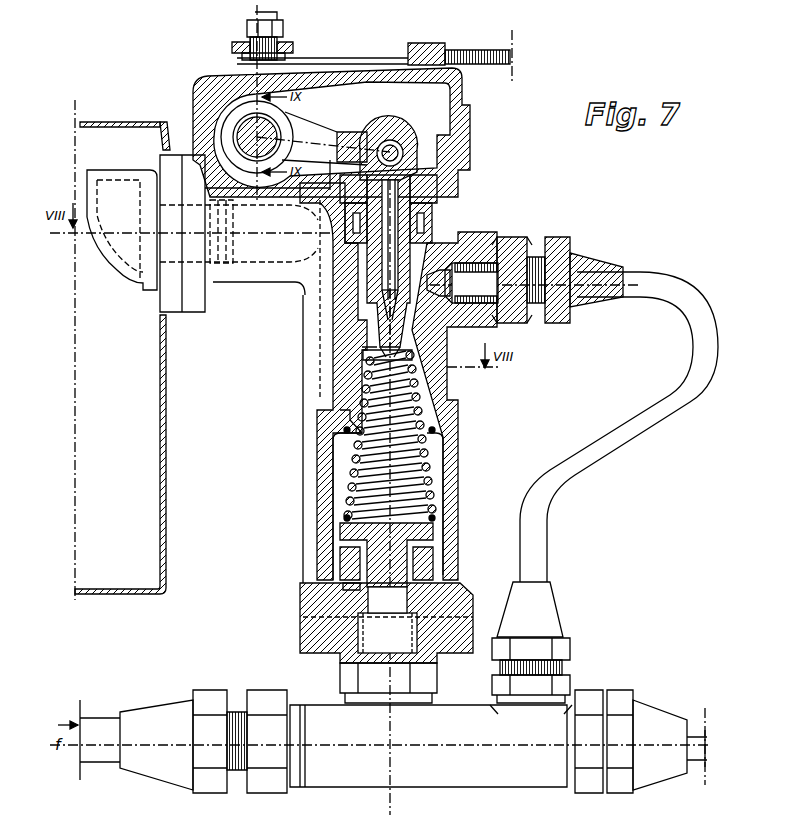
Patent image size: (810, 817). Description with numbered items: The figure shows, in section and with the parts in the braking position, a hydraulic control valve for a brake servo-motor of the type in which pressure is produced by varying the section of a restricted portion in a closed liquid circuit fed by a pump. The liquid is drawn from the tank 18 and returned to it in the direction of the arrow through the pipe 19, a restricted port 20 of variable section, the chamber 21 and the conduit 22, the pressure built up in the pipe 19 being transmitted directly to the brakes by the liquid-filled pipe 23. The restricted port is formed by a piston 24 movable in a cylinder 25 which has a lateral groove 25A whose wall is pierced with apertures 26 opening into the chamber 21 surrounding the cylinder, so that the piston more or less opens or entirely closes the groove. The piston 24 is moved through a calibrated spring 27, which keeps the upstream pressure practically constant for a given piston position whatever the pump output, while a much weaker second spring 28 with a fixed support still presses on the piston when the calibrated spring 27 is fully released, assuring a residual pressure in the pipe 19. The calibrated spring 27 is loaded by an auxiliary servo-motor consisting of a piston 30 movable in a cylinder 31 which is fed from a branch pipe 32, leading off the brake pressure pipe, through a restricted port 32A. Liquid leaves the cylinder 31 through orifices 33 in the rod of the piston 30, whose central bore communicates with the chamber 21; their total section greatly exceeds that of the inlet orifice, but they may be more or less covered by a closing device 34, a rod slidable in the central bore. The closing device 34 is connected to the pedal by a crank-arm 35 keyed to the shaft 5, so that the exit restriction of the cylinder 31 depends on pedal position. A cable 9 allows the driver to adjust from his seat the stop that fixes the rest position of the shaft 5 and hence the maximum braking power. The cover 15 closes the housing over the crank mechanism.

The shaft 5 is at (228, 128).
The cable 9 is at (368, 59).
The cover 15 is at (420, 88).
The tank 18 is at (128, 418).
The pipe 19 is at (103, 723).
The restricted port 20 is at (428, 587).
The chamber 21 is at (338, 476).
The conduit 22 is at (110, 190).
The pipe 23 is at (697, 742).
The piston 24 is at (385, 553).
The cylinder 25 is at (418, 560).
The lateral groove 25A is at (353, 588).
The apertures 26 is at (352, 579).
The calibrated spring 27 is at (415, 462).
The second spring 28 is at (435, 477).
The piston 30 is at (448, 406).
The cylinder 31 is at (353, 267).
The branch pipe 32 is at (653, 300).
The restricted port 32A is at (432, 283).
The orifices 33 is at (428, 282).
The closing device 34 is at (440, 212).
The crank-arm 35 is at (312, 128).